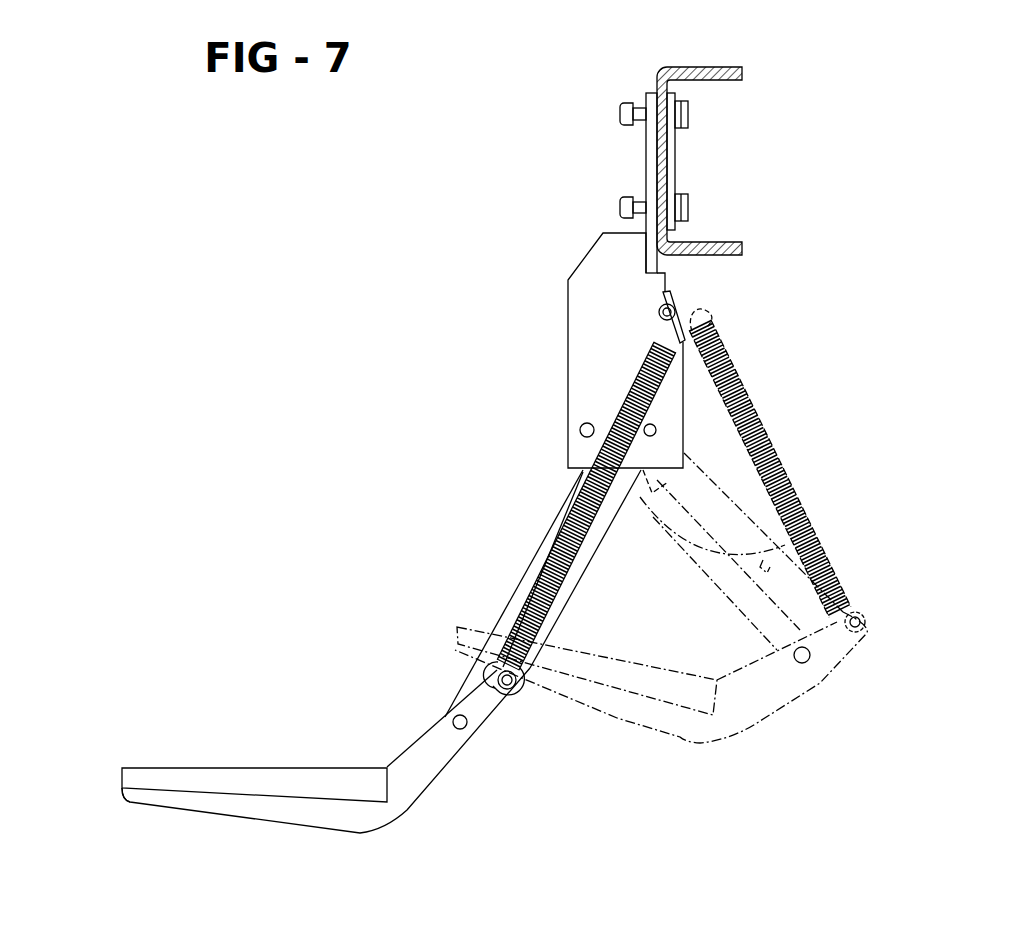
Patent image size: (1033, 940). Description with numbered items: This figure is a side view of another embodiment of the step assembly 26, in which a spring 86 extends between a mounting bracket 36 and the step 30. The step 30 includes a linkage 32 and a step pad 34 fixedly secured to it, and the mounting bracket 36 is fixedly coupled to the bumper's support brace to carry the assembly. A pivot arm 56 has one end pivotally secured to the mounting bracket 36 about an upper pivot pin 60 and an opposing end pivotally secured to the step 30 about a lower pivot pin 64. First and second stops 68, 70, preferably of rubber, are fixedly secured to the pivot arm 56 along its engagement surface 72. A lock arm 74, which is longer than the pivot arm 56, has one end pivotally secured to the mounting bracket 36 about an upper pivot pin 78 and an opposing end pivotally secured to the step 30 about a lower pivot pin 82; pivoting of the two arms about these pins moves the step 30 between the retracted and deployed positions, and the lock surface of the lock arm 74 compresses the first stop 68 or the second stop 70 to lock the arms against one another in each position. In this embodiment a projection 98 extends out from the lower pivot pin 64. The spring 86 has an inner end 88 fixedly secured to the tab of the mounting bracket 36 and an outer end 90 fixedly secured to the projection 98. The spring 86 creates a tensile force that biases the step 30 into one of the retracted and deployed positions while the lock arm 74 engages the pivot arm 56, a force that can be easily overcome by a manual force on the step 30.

The step assembly 26 is at (419, 688).
The step 30 is at (124, 802).
The linkage 32 is at (412, 796).
The step pad 34 is at (165, 765).
The mounting bracket 36 is at (562, 352).
The pivot arm 56 is at (587, 567).
The upper pivot pin 60 is at (656, 428).
The lower pivot pin 64 is at (497, 677).
The first stop 68 is at (650, 495).
The second stop 70 is at (815, 520).
The engagement surface 72 is at (715, 565).
The lock arm 74 is at (530, 552).
The upper pivot pin 78 is at (580, 430).
The lower pivot pin 82 is at (453, 722).
The spring 86 is at (560, 498).
The inner end 88 is at (663, 345).
The outer end 90 is at (515, 635).
The projection 98 is at (519, 689).